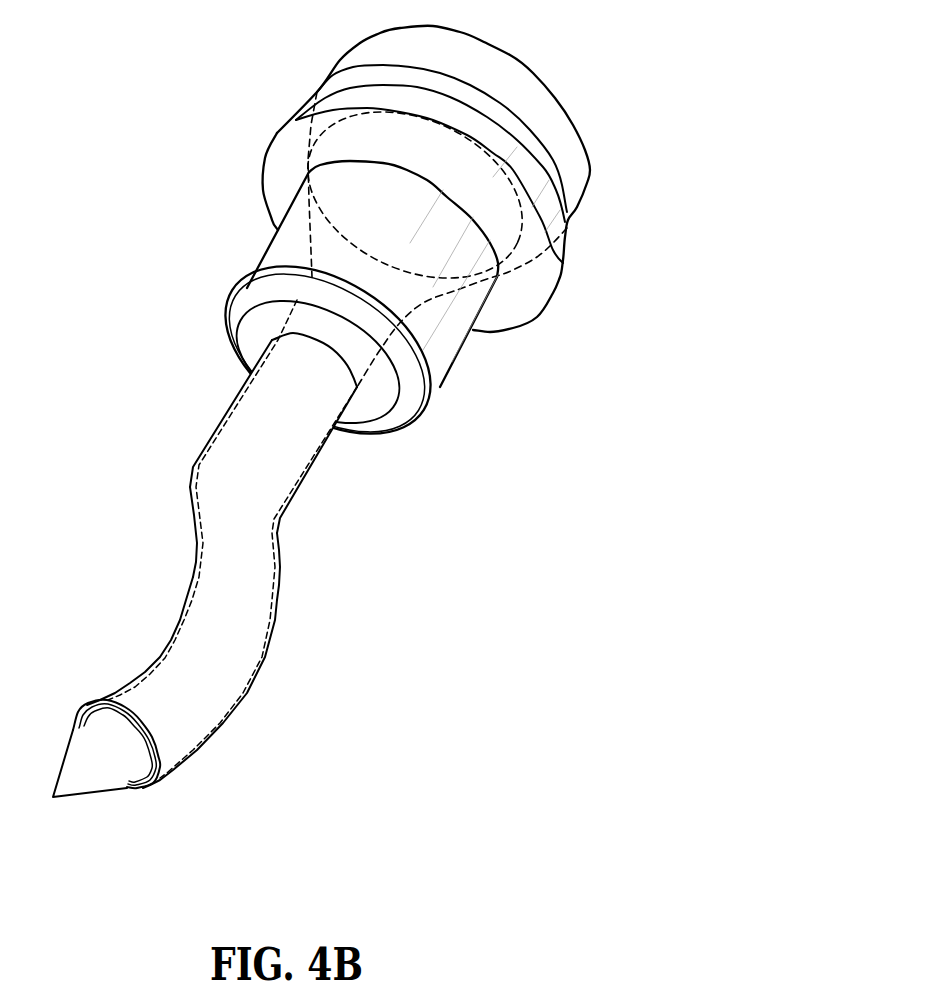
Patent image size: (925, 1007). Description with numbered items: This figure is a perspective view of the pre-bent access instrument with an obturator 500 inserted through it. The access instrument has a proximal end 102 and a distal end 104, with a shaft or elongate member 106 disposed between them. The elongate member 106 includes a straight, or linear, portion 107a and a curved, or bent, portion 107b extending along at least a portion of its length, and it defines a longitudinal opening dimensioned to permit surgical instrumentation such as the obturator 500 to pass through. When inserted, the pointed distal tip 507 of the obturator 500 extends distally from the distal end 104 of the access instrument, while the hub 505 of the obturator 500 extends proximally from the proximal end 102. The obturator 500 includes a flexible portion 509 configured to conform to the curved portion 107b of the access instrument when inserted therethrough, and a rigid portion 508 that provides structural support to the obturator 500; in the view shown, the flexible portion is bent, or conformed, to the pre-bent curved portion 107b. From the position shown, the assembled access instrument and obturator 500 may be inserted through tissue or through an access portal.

The obturator 500 is at (372, 442).
The hub 505 is at (476, 44).
The proximal end 102 is at (531, 287).
The rigid portion 508 is at (297, 300).
The straight portion 107a is at (322, 460).
The elongate member 106 is at (193, 542).
The flexible portion 509 is at (177, 625).
The curved portion 107b is at (273, 647).
The distal end 104 is at (242, 562).
The pointed distal tip 507 is at (102, 790).